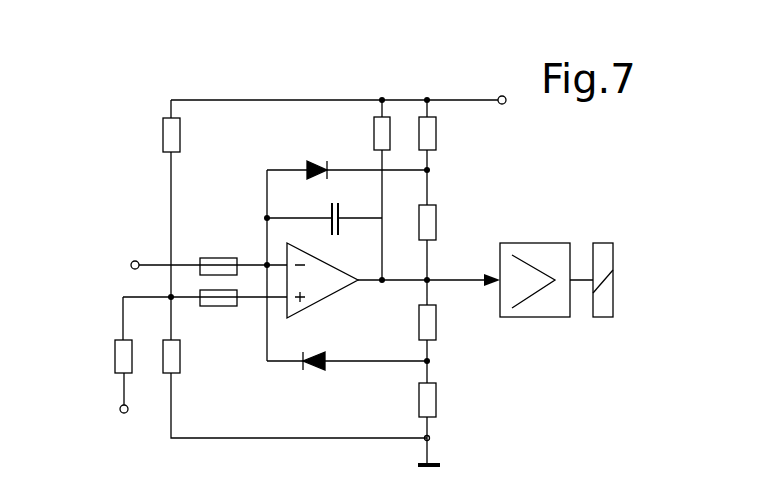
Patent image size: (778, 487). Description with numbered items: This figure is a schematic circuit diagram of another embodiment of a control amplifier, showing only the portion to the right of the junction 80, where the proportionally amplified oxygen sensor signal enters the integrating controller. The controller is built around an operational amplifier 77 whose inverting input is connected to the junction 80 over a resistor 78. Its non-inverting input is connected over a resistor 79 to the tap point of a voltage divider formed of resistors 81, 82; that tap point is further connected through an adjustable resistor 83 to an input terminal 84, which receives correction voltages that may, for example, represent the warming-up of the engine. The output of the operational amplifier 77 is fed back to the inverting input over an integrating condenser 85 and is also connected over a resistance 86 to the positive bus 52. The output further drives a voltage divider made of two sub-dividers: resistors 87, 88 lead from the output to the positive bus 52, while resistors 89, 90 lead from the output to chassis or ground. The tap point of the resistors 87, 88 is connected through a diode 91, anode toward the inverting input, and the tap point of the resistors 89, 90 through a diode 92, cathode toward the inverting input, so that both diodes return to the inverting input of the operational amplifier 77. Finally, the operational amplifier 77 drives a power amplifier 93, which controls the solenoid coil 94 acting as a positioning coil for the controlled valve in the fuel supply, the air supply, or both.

The positive bus 52 is at (458, 98).
The operational amplifier 77 is at (325, 285).
The resistor 78 is at (218, 257).
The resistor 79 is at (218, 317).
The junction 80 is at (136, 247).
The resistor 81 is at (190, 136).
The resistor 82 is at (181, 357).
The adjustable resistor 83 is at (108, 358).
The input terminal 84 is at (122, 418).
The integrating condenser 85 is at (342, 212).
The resistance 86 is at (374, 133).
The resistor 87 is at (437, 130).
The resistor 88 is at (437, 222).
The resistor 89 is at (437, 328).
The resistor 90 is at (437, 402).
The diode 91 is at (312, 163).
The diode 92 is at (318, 373).
The power amplifier 93 is at (537, 318).
The solenoid coil 94 is at (605, 318).